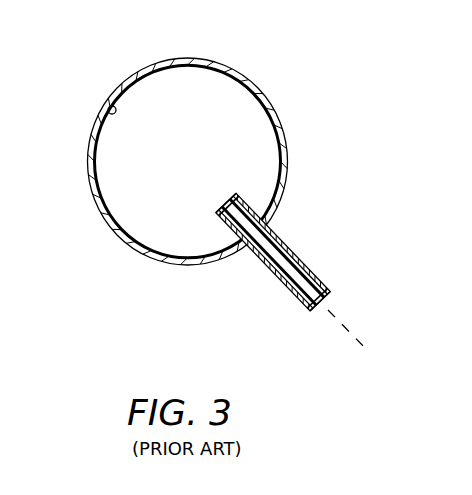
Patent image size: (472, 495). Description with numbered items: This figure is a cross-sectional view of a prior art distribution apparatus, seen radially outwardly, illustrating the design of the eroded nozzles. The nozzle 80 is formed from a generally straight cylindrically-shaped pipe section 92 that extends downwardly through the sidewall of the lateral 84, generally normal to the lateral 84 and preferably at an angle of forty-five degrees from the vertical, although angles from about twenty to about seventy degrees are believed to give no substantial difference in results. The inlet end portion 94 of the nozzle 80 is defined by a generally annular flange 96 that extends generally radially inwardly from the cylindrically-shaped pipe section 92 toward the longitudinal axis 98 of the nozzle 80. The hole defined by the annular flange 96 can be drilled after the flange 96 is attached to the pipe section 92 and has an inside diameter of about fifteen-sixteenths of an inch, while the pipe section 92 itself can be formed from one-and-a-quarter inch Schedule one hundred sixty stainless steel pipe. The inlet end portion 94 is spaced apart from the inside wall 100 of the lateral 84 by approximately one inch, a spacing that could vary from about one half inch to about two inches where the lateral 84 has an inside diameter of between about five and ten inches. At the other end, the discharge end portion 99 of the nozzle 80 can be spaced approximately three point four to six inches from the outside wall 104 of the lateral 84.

The nozzle 80 is at (261, 253).
The lateral 84 is at (257, 93).
The cylindrically-shaped pipe section 92 is at (270, 278).
The inlet end portion 94 is at (237, 193).
The annular flange 96 is at (219, 209).
The longitudinal axis 98 is at (358, 326).
The discharge end portion 99 is at (313, 313).
The inside wall 100 is at (108, 107).
The outside wall 104 is at (291, 160).